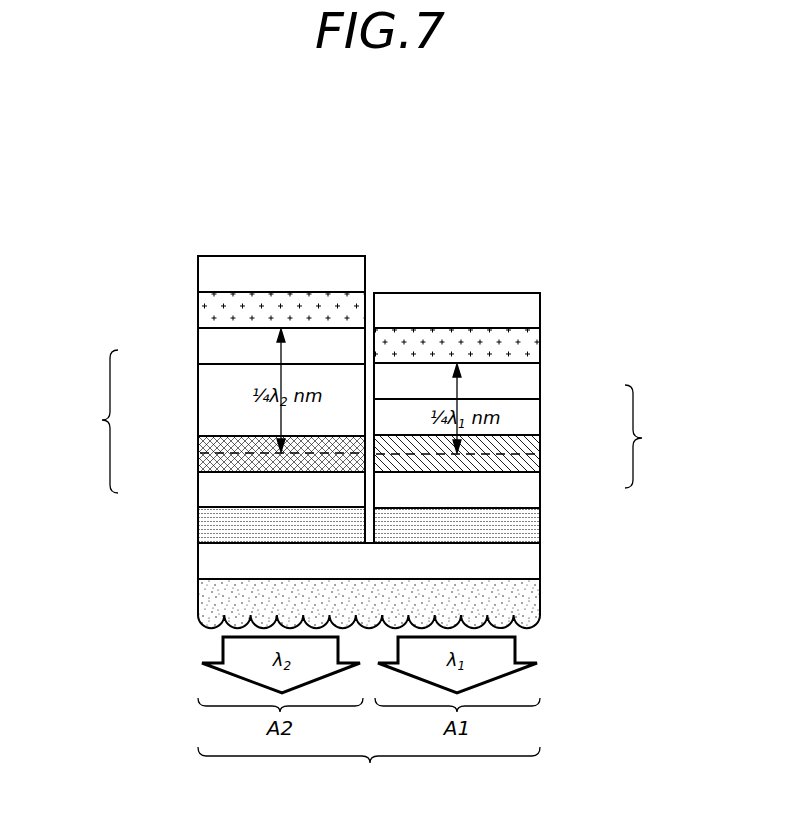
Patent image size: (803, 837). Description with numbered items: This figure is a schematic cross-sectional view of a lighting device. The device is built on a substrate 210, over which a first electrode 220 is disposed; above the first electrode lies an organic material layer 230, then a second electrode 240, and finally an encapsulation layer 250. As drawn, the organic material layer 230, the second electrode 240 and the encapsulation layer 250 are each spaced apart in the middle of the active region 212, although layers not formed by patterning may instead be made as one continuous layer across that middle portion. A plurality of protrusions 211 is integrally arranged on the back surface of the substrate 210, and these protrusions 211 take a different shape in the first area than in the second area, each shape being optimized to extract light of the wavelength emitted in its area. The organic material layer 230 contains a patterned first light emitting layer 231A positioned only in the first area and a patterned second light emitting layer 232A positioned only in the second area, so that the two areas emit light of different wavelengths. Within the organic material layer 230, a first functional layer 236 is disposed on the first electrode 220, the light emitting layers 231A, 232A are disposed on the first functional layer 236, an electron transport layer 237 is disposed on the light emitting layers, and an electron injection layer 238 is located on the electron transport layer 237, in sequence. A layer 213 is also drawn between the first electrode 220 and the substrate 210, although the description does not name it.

The encapsulation layer 250 is at (210, 273).
The second electrode 240 is at (210, 312).
The electron injection layer 238 is at (210, 345).
The electron transport layer 237 is at (210, 398).
The second light emitting layer 232A is at (210, 447).
The first light emitting layer 231A is at (527, 463).
The first functional layer 236 is at (210, 492).
The organic material layer 230 is at (372, 421).
The first electrode 220 is at (210, 527).
The planarization layer 213 is at (527, 562).
The substrate 210 is at (527, 600).
The protrusions 211 is at (538, 628).
The active region 212 is at (369, 769).